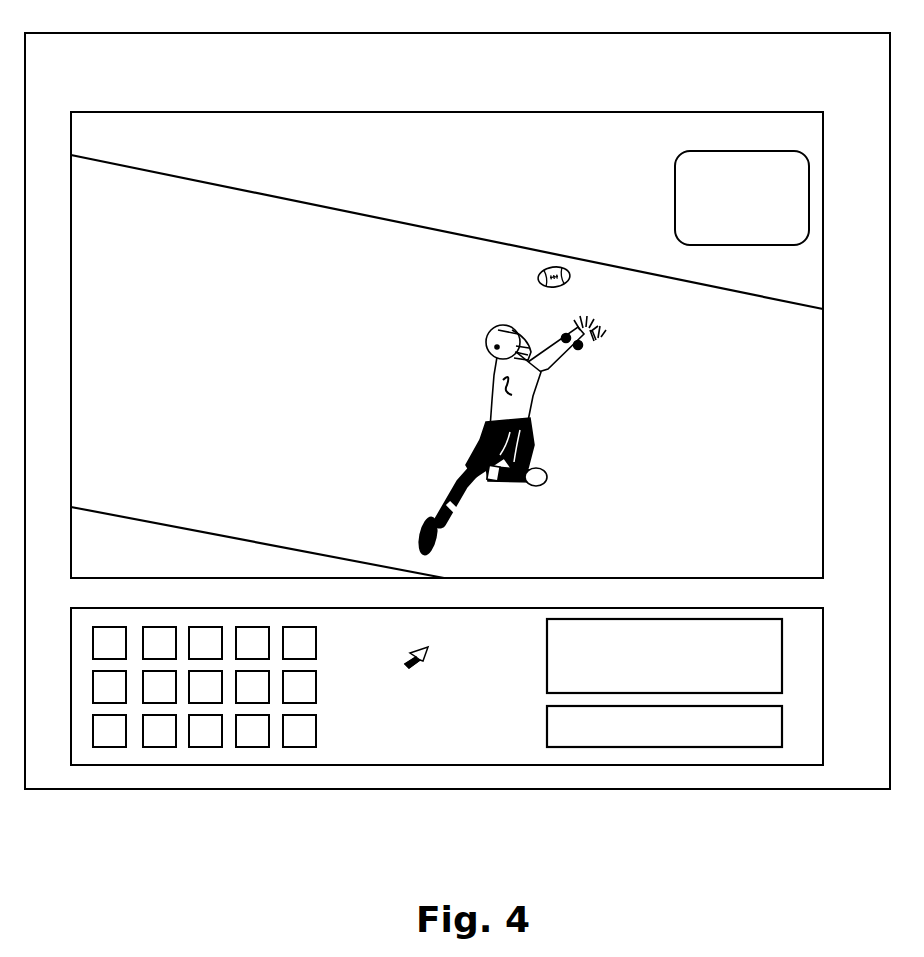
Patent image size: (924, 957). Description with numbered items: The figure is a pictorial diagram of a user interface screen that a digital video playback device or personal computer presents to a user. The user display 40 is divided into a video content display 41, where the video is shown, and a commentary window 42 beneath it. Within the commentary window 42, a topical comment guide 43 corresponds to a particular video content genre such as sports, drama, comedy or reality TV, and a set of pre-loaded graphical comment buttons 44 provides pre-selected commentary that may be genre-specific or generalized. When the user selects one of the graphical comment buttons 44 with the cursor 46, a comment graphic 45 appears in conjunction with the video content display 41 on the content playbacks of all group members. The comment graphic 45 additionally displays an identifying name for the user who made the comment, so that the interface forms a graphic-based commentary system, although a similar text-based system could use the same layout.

The user display 40 is at (689, 33).
The video content display 41 is at (665, 112).
The commentary window 42 is at (810, 608).
The topical comment guide 43 is at (782, 641).
The graphical comment buttons 44 is at (316, 633).
The comment graphic 45 is at (675, 165).
The cursor 46 is at (418, 643).